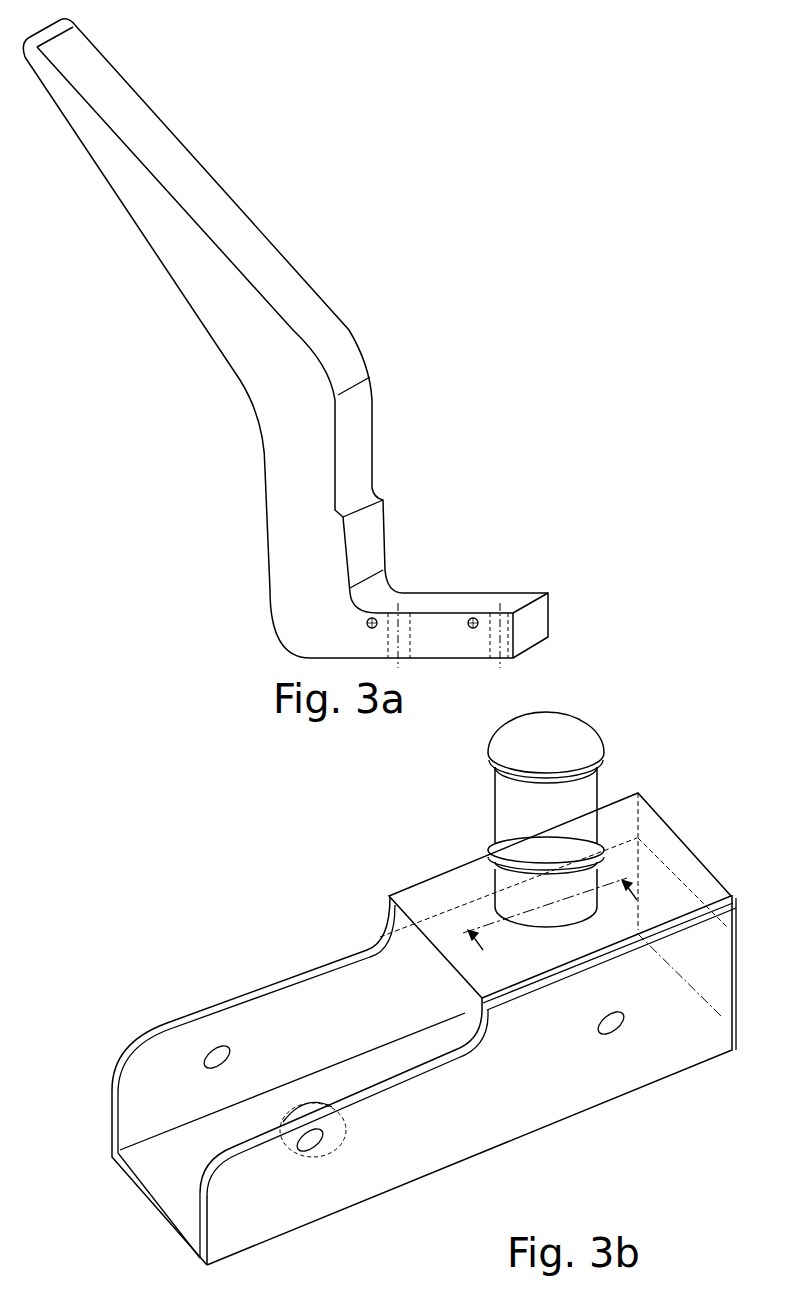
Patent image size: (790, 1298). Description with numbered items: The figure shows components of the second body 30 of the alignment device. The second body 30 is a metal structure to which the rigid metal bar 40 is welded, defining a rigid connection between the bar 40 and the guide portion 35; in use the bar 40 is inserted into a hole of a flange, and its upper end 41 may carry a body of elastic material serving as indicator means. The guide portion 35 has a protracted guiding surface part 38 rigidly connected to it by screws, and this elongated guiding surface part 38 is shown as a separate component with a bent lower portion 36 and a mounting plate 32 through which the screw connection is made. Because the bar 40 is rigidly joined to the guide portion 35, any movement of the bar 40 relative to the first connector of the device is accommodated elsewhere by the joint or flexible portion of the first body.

In FIG. 3B, the second body 30 is at (537, 1083).
In FIG. 3B, the mounting plate 32 is at (437, 897).
In FIG. 3A, the guide portion 35 is at (272, 300).
In FIG. 3A, the bent lower portion 36 is at (303, 580).
In FIG. 3A, the protracted guiding surface part 38 is at (173, 167).
In FIG. 3B, the rigid metal bar 40 is at (513, 803).
In FIG. 3B, the upper end 41 is at (567, 722).